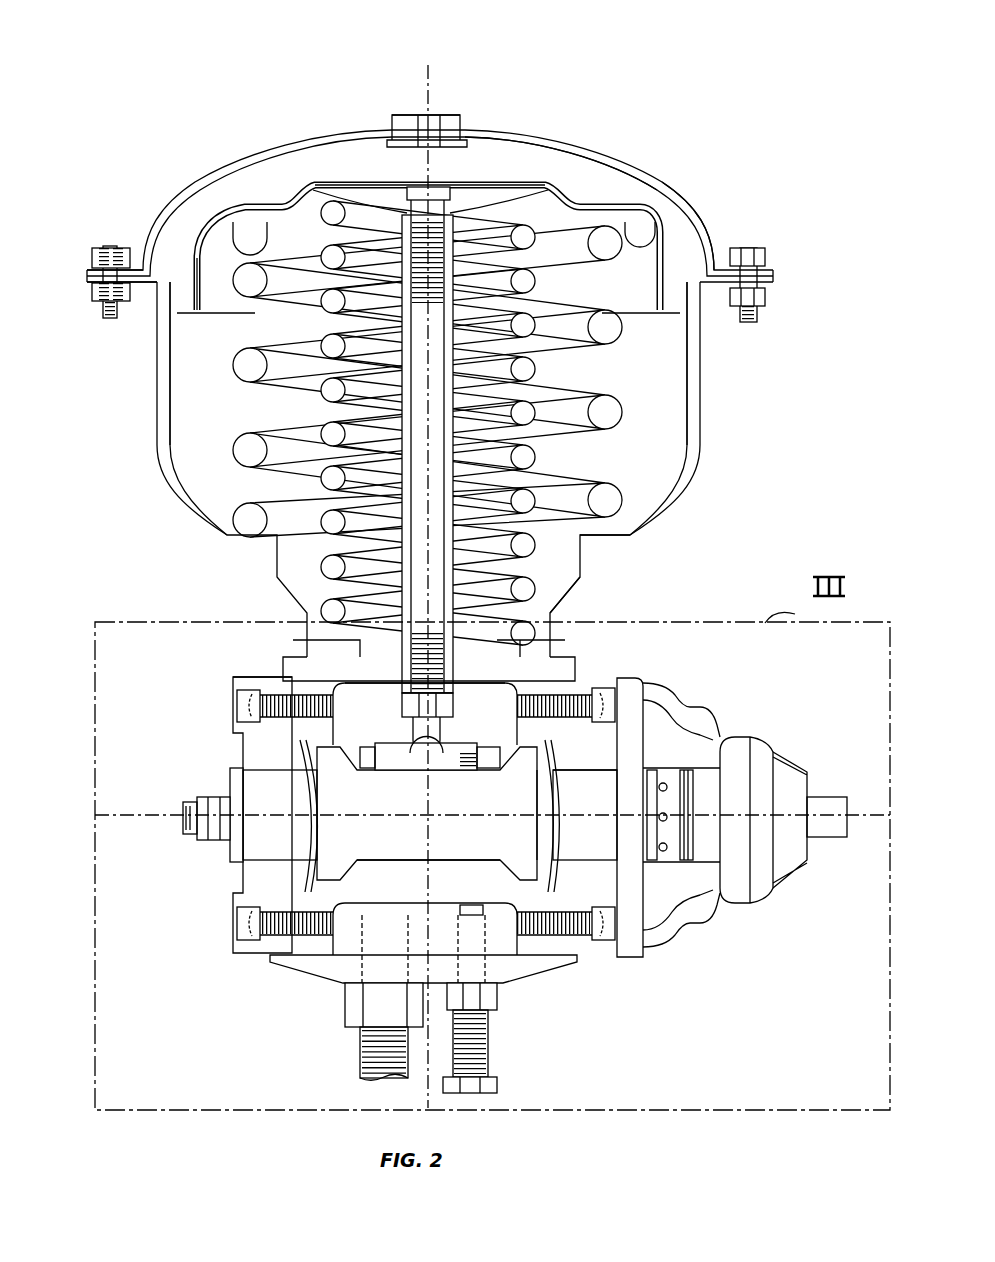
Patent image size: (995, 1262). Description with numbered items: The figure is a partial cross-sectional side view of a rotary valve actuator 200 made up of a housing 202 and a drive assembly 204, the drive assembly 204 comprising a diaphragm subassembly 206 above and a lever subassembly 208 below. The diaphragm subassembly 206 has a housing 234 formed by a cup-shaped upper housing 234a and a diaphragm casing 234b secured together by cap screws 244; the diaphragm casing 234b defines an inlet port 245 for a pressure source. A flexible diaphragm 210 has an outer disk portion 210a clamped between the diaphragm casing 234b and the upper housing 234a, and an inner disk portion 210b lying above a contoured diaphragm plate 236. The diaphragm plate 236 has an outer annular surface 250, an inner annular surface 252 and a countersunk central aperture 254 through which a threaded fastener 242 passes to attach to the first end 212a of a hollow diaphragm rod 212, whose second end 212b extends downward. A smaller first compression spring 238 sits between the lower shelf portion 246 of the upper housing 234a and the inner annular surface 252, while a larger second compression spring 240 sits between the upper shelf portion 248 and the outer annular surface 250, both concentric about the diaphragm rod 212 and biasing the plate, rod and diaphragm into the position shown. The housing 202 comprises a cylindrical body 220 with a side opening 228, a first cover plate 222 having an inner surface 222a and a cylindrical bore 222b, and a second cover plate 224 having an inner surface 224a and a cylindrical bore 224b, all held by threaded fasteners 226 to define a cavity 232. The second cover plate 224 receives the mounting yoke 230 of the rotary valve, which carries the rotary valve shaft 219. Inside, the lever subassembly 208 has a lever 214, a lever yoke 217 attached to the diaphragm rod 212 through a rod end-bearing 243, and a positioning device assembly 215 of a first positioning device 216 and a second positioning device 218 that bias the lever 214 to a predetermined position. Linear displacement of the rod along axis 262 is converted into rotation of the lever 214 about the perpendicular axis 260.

The rotary valve actuator 200 is at (760, 183).
The housing 202 is at (657, 677).
The drive assembly 204 is at (357, 700).
The diaphragm subassembly 206 is at (660, 431).
The lever subassembly 208 is at (343, 963).
The diaphragm 210 is at (574, 182).
The outer disk portion 210a is at (88, 272).
The inner disk portion 210b is at (607, 205).
The diaphragm rod 212 is at (370, 237).
The first end 212a is at (380, 235).
The second end 212b is at (407, 513).
The lever 214 is at (472, 808).
The positioning device assembly 215 is at (552, 848).
The first positioning device 216 is at (298, 872).
The lever yoke 217 is at (470, 740).
The second positioning device 218 is at (565, 873).
The rotary valve shaft 219 is at (828, 797).
The cylindrical body 220 is at (300, 748).
The first cover plate 222 is at (247, 893).
The inner surface 222a is at (280, 712).
The cylindrical bore 222b is at (270, 765).
The second cover plate 224 is at (594, 952).
The inner surface 224a is at (672, 723).
The cylindrical bore 224b is at (667, 787).
The threaded fasteners 226 is at (290, 712).
The opening 228 is at (514, 690).
The mounting yoke 230 is at (754, 887).
The cavity 232 is at (476, 896).
The housing 234 is at (705, 362).
The upper housing 234a is at (688, 447).
The diaphragm casing 234b is at (641, 167).
The diaphragm plate 236 is at (537, 197).
The first compression spring 238 is at (321, 388).
The second compression spring 240 is at (233, 367).
The threaded fastener 242 is at (392, 178).
The rod end-bearing 243 is at (395, 700).
The cap screws 244 is at (112, 245).
The inlet port 245 is at (437, 128).
The lower shelf portion 246 is at (547, 650).
The upper shelf portion 248 is at (622, 535).
The outer annular surface 250 is at (640, 230).
The inner annular surface 252 is at (493, 208).
The central aperture 254 is at (412, 178).
The axis 260 is at (863, 814).
The axis 262 is at (428, 92).